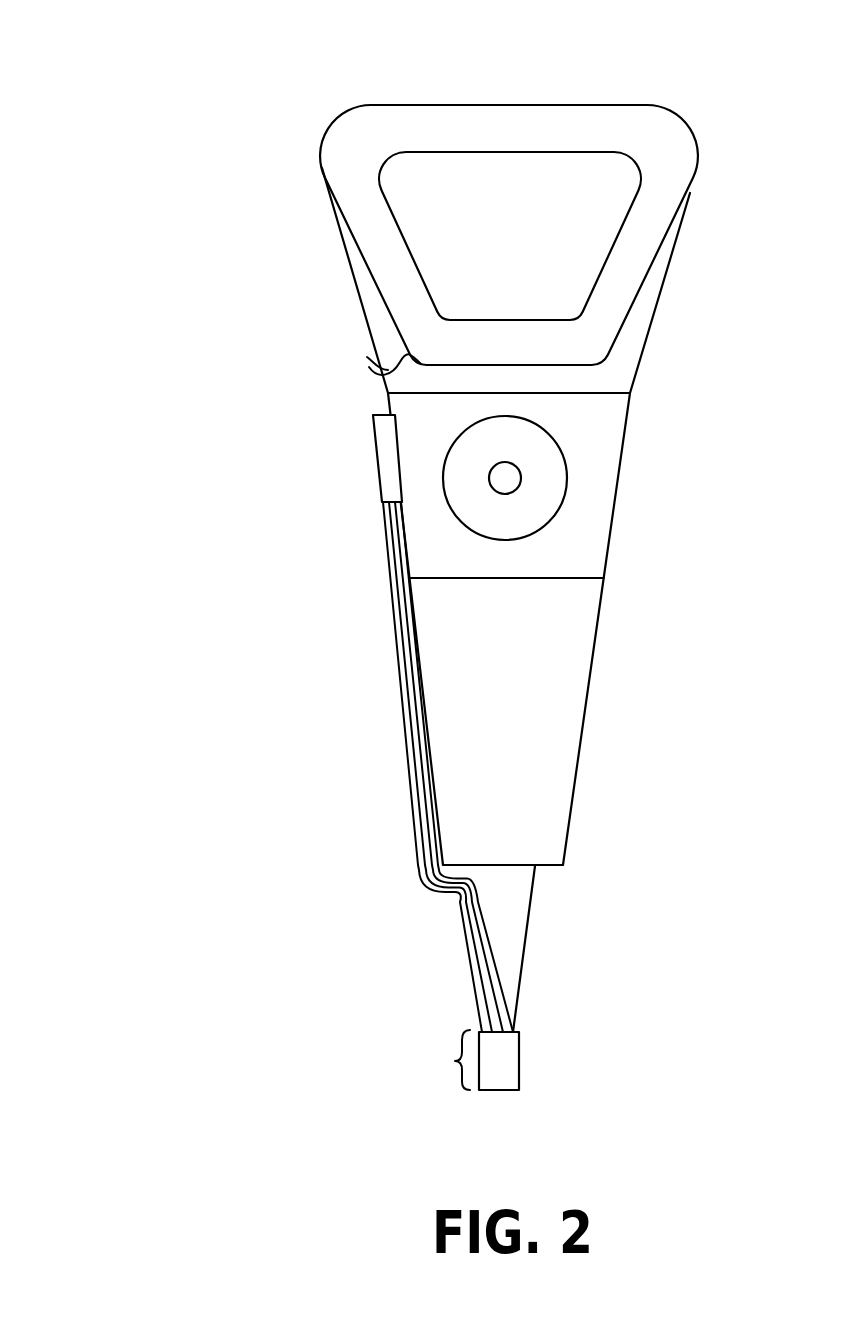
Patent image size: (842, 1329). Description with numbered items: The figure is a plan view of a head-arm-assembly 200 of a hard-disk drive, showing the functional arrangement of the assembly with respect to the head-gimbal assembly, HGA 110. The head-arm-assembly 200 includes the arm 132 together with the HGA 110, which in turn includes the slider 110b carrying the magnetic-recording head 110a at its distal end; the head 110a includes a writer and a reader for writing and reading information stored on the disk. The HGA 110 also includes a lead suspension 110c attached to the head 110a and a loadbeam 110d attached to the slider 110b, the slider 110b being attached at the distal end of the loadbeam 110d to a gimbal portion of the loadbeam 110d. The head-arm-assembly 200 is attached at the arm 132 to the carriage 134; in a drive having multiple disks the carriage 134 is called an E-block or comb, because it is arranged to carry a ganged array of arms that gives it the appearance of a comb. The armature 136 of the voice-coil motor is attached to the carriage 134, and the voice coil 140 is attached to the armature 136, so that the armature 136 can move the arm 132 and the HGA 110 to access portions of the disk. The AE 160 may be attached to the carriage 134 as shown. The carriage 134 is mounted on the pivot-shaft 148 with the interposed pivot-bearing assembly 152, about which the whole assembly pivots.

The head-arm-assembly 200 is at (104, 84).
The voice coil 140 is at (388, 265).
The armature 136 is at (388, 338).
The AE 160 is at (388, 468).
The pivot-shaft 148 is at (505, 478).
The pivot-bearing assembly 152 is at (543, 488).
The carriage 134 is at (572, 539).
The arm 132 is at (500, 673).
The HGA 110 is at (270, 817).
The magnetic-recording head 110a is at (488, 1078).
The slider 110b is at (458, 1062).
The lead suspension 110c is at (472, 953).
The loadbeam 110d is at (503, 910).